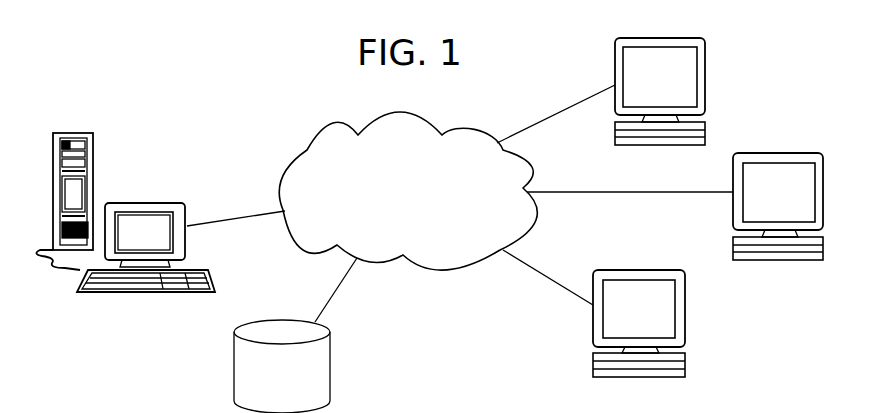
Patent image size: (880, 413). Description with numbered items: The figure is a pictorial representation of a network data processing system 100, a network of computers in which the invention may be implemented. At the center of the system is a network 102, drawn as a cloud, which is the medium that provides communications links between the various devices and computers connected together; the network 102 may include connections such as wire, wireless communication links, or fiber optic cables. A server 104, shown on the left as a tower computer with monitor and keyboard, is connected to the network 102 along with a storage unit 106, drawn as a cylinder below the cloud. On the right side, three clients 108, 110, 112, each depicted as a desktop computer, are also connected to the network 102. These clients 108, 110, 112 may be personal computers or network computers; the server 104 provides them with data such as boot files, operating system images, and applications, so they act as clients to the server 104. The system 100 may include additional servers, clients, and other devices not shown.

The network data processing system 100 is at (433, 98).
The network 102 is at (427, 184).
The server 104 is at (93, 168).
The storage unit 106 is at (248, 320).
The client 108 is at (623, 37).
The client 110 is at (743, 152).
The client 112 is at (602, 268).